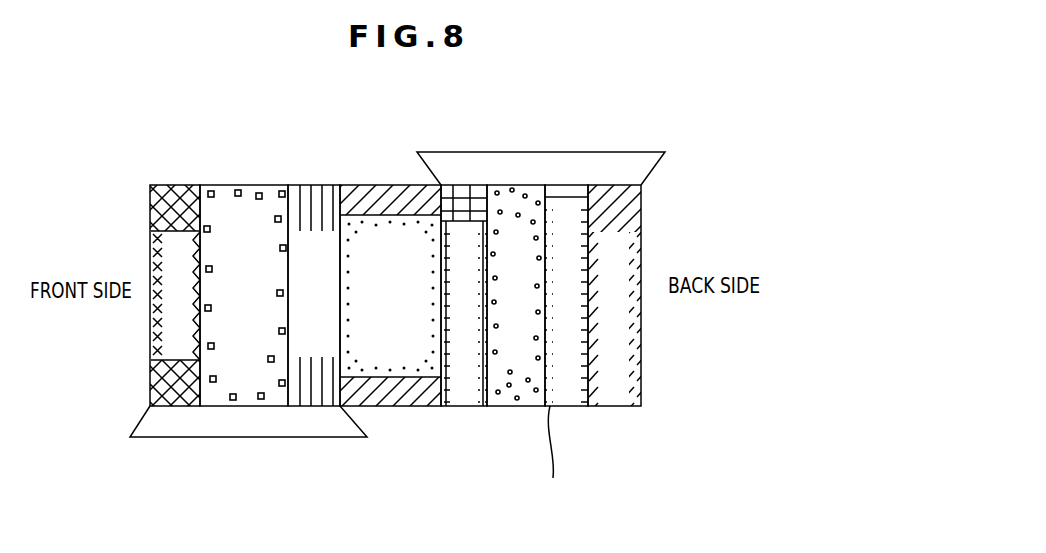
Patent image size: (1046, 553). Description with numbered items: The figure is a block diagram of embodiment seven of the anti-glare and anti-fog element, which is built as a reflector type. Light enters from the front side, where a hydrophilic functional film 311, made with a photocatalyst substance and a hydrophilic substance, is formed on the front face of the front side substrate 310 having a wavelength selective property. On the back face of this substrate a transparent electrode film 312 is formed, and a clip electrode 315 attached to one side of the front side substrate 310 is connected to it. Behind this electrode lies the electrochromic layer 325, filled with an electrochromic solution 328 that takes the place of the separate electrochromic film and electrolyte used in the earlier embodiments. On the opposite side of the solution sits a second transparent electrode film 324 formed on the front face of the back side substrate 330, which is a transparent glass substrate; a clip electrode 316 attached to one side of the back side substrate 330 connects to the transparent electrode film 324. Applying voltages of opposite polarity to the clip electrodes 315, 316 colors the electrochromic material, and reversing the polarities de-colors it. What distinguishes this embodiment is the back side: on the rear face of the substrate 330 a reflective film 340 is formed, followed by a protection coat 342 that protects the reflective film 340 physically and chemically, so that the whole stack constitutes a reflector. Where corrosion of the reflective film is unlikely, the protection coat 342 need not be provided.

The substrate having a wavelength selection property 310 is at (243, 406).
The hydrophilic functional film 311 is at (186, 406).
The transparent electrode film 312 is at (313, 406).
The front substrate 315 is at (150, 414).
The back substrate 316 is at (647, 170).
The transparent electrode film 324 is at (461, 406).
The electrochromic solution 325 is at (392, 406).
The seal 328 is at (387, 213).
The back side substrate 330 is at (513, 406).
The reflective film 340 is at (572, 406).
The protection coat 342 is at (612, 406).